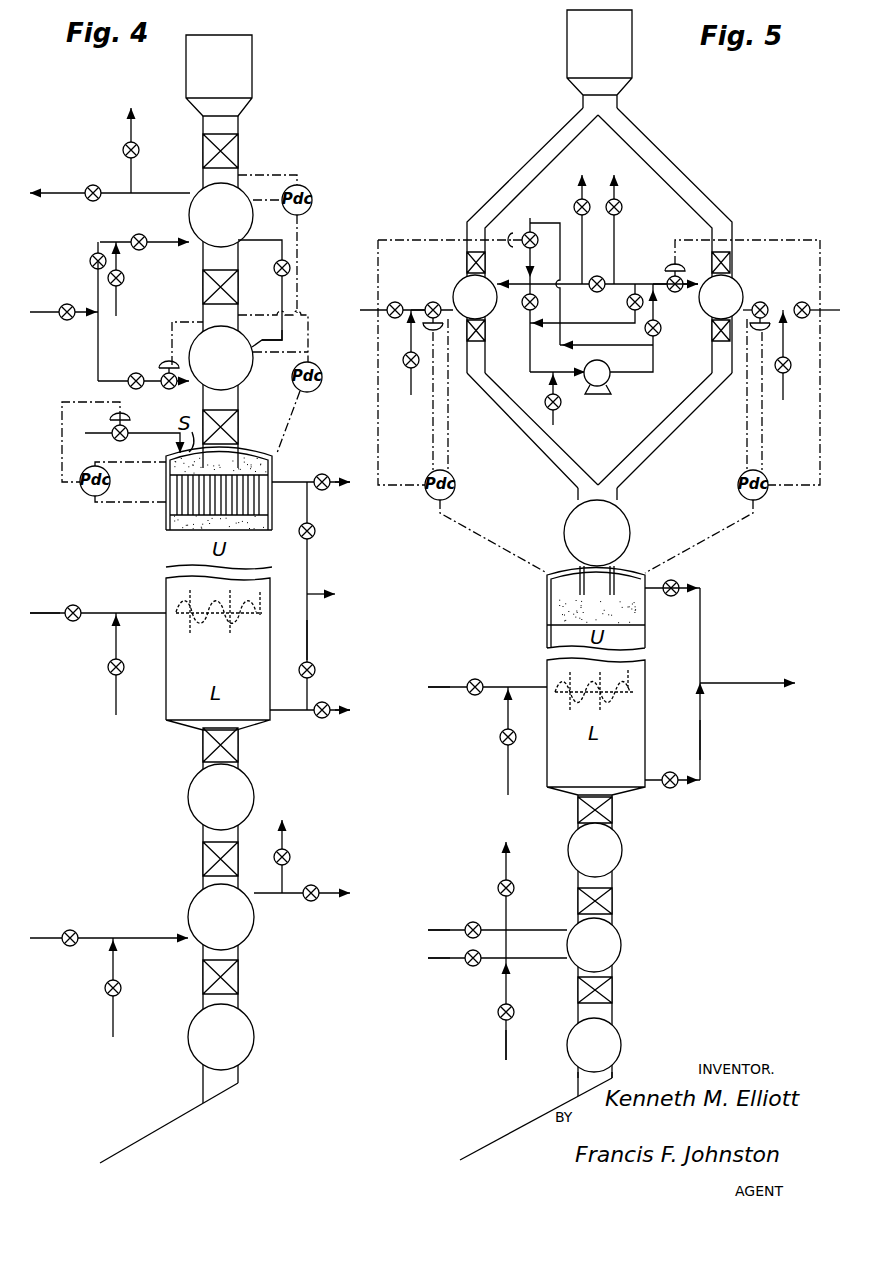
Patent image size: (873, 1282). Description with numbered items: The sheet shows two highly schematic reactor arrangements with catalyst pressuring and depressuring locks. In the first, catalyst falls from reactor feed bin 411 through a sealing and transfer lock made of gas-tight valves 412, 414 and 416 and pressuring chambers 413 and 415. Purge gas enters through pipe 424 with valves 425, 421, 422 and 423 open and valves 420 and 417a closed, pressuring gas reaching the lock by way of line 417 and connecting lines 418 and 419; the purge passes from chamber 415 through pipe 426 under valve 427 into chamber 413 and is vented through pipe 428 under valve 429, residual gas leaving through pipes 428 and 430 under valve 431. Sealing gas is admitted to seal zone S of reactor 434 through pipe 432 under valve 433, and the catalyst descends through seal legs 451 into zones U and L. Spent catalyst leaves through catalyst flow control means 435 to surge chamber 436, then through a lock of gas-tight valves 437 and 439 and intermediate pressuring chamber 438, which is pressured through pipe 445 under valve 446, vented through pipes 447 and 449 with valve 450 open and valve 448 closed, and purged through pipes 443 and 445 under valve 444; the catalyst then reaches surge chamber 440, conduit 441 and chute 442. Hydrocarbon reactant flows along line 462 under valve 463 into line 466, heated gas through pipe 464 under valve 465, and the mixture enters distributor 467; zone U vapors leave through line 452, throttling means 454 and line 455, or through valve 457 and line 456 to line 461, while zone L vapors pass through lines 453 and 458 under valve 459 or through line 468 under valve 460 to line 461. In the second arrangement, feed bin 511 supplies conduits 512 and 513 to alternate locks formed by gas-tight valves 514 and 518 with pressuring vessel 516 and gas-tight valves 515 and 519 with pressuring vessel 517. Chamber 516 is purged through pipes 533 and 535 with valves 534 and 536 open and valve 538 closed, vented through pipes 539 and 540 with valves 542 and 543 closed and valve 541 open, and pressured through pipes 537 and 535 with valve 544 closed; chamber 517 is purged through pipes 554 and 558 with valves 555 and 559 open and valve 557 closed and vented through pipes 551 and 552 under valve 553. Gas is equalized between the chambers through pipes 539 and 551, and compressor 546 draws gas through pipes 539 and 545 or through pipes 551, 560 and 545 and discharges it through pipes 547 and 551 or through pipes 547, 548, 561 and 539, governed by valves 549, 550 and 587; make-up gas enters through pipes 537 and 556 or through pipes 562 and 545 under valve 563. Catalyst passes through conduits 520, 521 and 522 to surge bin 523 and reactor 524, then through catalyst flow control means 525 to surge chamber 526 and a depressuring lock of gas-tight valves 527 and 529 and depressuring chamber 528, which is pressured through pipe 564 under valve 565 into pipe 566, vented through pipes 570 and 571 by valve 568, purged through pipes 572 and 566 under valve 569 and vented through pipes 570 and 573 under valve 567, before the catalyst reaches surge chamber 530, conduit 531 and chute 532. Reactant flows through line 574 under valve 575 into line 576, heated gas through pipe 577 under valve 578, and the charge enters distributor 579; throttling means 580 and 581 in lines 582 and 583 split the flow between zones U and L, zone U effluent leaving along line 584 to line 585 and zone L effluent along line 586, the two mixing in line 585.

In FIG. 4, the reactor feed bin 411 is at (219, 75).
In FIG. 4, the gas-tight valve 412 is at (238, 148).
In FIG. 4, the pressuring chamber 413 is at (221, 215).
In FIG. 4, the gas-tight valve 414 is at (235, 290).
In FIG. 4, the pressuring chamber 415 is at (221, 358).
In FIG. 4, the gas-tight valve 416 is at (238, 420).
In FIG. 4, the gas inlet line 417 is at (40, 308).
In FIG. 4, the valve 417a is at (68, 320).
In FIG. 4, the line 418 is at (98, 246).
In FIG. 4, the line 419 is at (98, 360).
In FIG. 4, the valve 420 is at (141, 234).
In FIG. 4, the valve 421 is at (90, 261).
In FIG. 4, the valve 422 is at (133, 373).
In FIG. 4, the valve 423 is at (165, 389).
In FIG. 4, the pipe 424 is at (120, 296).
In FIG. 4, the valve 425 is at (124, 278).
In FIG. 4, the pipe 426 is at (272, 343).
In FIG. 4, the valve 427 is at (274, 268).
In FIG. 4, the pipe 428 is at (156, 192).
In FIG. 4, the valve 429 is at (140, 150).
In FIG. 4, the pipe 430 is at (50, 190).
In FIG. 4, the valve 431 is at (95, 185).
In FIG. 4, the pipe 432 is at (88, 436).
In FIG. 4, the valve 433 is at (112, 432).
In FIG. 4, the reactor 434 is at (172, 720).
In FIG. 4, the catalyst flow control means 435 is at (203, 748).
In FIG. 4, the surge chamber 436 is at (221, 797).
In FIG. 4, the gas-tight valve 437 is at (203, 858).
In FIG. 4, the pressuring chamber 438 is at (221, 917).
In FIG. 4, the gas-tight valve 439 is at (203, 980).
In FIG. 4, the surge chamber 440 is at (221, 1037).
In FIG. 4, the conduit 441 is at (230, 1080).
In FIG. 4, the chute 442 is at (152, 1132).
In FIG. 4, the pipe 443 is at (113, 1022).
In FIG. 4, the valve 444 is at (105, 989).
In FIG. 4, the pipe 445 is at (153, 936).
In FIG. 4, the valve 446 is at (72, 930).
In FIG. 4, the pipe 447 is at (262, 900).
In FIG. 4, the valve 448 is at (308, 901).
In FIG. 4, the pipe 449 is at (288, 876).
In FIG. 4, the valve 450 is at (290, 855).
In FIG. 4, the seal legs 451 is at (170, 505).
In FIG. 4, the line 452 is at (283, 480).
In FIG. 4, the line 453 is at (290, 712).
In FIG. 4, the throttling means 454 is at (325, 474).
In FIG. 4, the line 455 is at (330, 490).
In FIG. 4, the line 456 is at (308, 565).
In FIG. 4, the valve 457 is at (316, 533).
In FIG. 4, the line 458 is at (325, 718).
In FIG. 4, the valve 459 is at (335, 698).
In FIG. 4, the valve 460 is at (316, 671).
In FIG. 4, the line 461 is at (315, 596).
In FIG. 4, the line 462 is at (45, 614).
In FIG. 4, the valve 463 is at (72, 605).
In FIG. 4, the pipe 464 is at (116, 706).
In FIG. 4, the valve 465 is at (108, 668).
In FIG. 4, the line 466 is at (122, 610).
In FIG. 4, the distributor 467 is at (219, 611).
In FIG. 4, the line 468 is at (308, 640).
In FIG. 5, the reactor feed bin 511 is at (599, 59).
In FIG. 5, the conduit 512 is at (555, 138).
In FIG. 5, the conduit 513 is at (650, 138).
In FIG. 5, the gas-tight valve 514 is at (467, 248).
In FIG. 5, the gas-tight valve 515 is at (732, 264).
In FIG. 5, the pressuring vessel 516 is at (475, 297).
In FIG. 5, the pressuring vessel 517 is at (721, 297).
In FIG. 5, the gas-tight valve 518 is at (485, 338).
In FIG. 5, the gas-tight valve 519 is at (712, 345).
In FIG. 5, the conduit 520 is at (525, 440).
In FIG. 5, the conduit 521 is at (676, 430).
In FIG. 5, the conduit 522 is at (617, 505).
In FIG. 5, the surge bin 523 is at (597, 533).
In FIG. 5, the reactor 524 is at (596, 726).
In FIG. 5, the catalyst flow control means 525 is at (578, 812).
In FIG. 5, the surge chamber 526 is at (595, 850).
In FIG. 5, the gas-tight valve 527 is at (612, 900).
In FIG. 5, the depressuring chamber 528 is at (594, 945).
In FIG. 5, the gas-tight valve 529 is at (612, 992).
In FIG. 5, the surge chamber 530 is at (594, 1045).
In FIG. 5, the conduit 531 is at (615, 1075).
In FIG. 5, the chute 532 is at (525, 1120).
In FIG. 5, the pipe 533 is at (430, 415).
In FIG. 5, the valve 534 is at (411, 375).
In FIG. 5, the pipe 535 is at (440, 300).
In FIG. 5, the valve 536 is at (430, 300).
In FIG. 5, the pipe 537 is at (358, 315).
In FIG. 5, the valve 538 is at (396, 302).
In FIG. 5, the pipe 539 is at (505, 282).
In FIG. 5, the pipe 540 is at (574, 210).
In FIG. 5, the valve 541 is at (578, 198).
In FIG. 5, the valve 542 is at (597, 275).
In FIG. 5, the valve 543 is at (522, 235).
In FIG. 5, the valve 544 is at (524, 308).
In FIG. 5, the pipe 545 is at (528, 360).
In FIG. 5, the compressor 546 is at (610, 372).
In FIG. 5, the pipe 547 is at (648, 378).
In FIG. 5, the pipe 548 is at (612, 353).
In FIG. 5, the valve 549 is at (680, 295).
In FIG. 5, the valve 550 is at (672, 278).
In FIG. 5, the pipe 551 is at (620, 282).
In FIG. 5, the pipe 552 is at (618, 200).
In FIG. 5, the valve 553 is at (622, 208).
In FIG. 5, the pipe 554 is at (768, 420).
In FIG. 5, the valve 555 is at (788, 370).
In FIG. 5, the pipe 556 is at (810, 318).
In FIG. 5, the valve 557 is at (806, 302).
In FIG. 5, the pipe 558 is at (752, 304).
In FIG. 5, the valve 559 is at (770, 305).
In FIG. 5, the pipe 560 is at (590, 323).
In FIG. 5, the pipe 561 is at (560, 300).
In FIG. 5, the pipe 562 is at (552, 398).
In FIG. 5, the valve 563 is at (556, 425).
In FIG. 5, the pipe 564 is at (430, 960).
In FIG. 5, the valve 565 is at (470, 966).
In FIG. 5, the pipe 566 is at (532, 960).
In FIG. 5, the valve 567 is at (476, 922).
In FIG. 5, the valve 568 is at (515, 888).
In FIG. 5, the valve 569 is at (498, 1013).
In FIG. 5, the pipe 570 is at (555, 920).
In FIG. 5, the pipe 571 is at (503, 860).
In FIG. 5, the pipe 572 is at (506, 1045).
In FIG. 5, the pipe 573 is at (433, 928).
In FIG. 5, the line 574 is at (438, 685).
In FIG. 5, the valve 575 is at (477, 678).
In FIG. 5, the line 576 is at (518, 685).
In FIG. 5, the pipe 577 is at (508, 768).
In FIG. 5, the valve 578 is at (500, 737).
In FIG. 5, the distributor 579 is at (638, 680).
In FIG. 5, the throttling means 580 is at (680, 585).
In FIG. 5, the throttling means 581 is at (678, 790).
In FIG. 5, the line 582 is at (652, 592).
In FIG. 5, the line 583 is at (653, 778).
In FIG. 5, the line 584 is at (700, 656).
In FIG. 5, the line 585 is at (750, 682).
In FIG. 5, the line 586 is at (700, 732).
In FIG. 5, the valve 587 is at (658, 340).